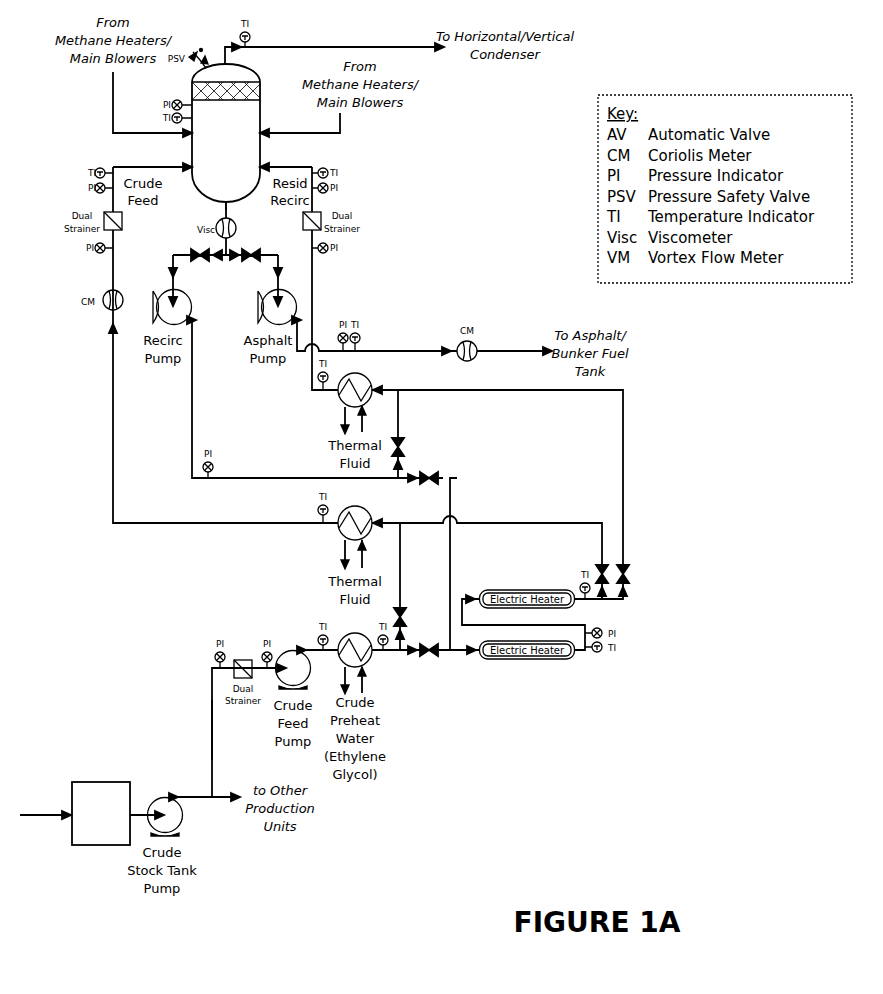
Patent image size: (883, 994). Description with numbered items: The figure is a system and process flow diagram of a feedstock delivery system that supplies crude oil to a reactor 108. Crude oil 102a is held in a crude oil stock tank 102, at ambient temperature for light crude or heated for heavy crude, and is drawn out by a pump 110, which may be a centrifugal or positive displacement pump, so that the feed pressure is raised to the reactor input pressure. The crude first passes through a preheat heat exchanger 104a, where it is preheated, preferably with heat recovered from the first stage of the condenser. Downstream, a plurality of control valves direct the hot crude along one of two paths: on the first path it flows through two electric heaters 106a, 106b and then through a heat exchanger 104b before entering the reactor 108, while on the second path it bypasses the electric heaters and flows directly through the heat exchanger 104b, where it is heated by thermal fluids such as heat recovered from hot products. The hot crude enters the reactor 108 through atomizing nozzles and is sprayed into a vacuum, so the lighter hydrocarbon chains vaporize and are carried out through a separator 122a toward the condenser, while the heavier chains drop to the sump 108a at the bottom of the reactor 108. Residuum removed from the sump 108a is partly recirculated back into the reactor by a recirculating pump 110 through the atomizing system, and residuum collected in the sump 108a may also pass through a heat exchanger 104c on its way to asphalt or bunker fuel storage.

The crude oil stock tank 102 is at (101, 823).
The crude oil 102a is at (212, 722).
The preheat heat exchanger 104a is at (355, 656).
The heat exchanger 104b is at (356, 530).
The heat exchanger 104c is at (355, 396).
The electric heater 106a is at (527, 660).
The electric heater 106b is at (527, 591).
The reactor 108 is at (262, 152).
The sump 108a is at (207, 197).
The pump 110 is at (176, 790).
The separator 122a is at (193, 89).